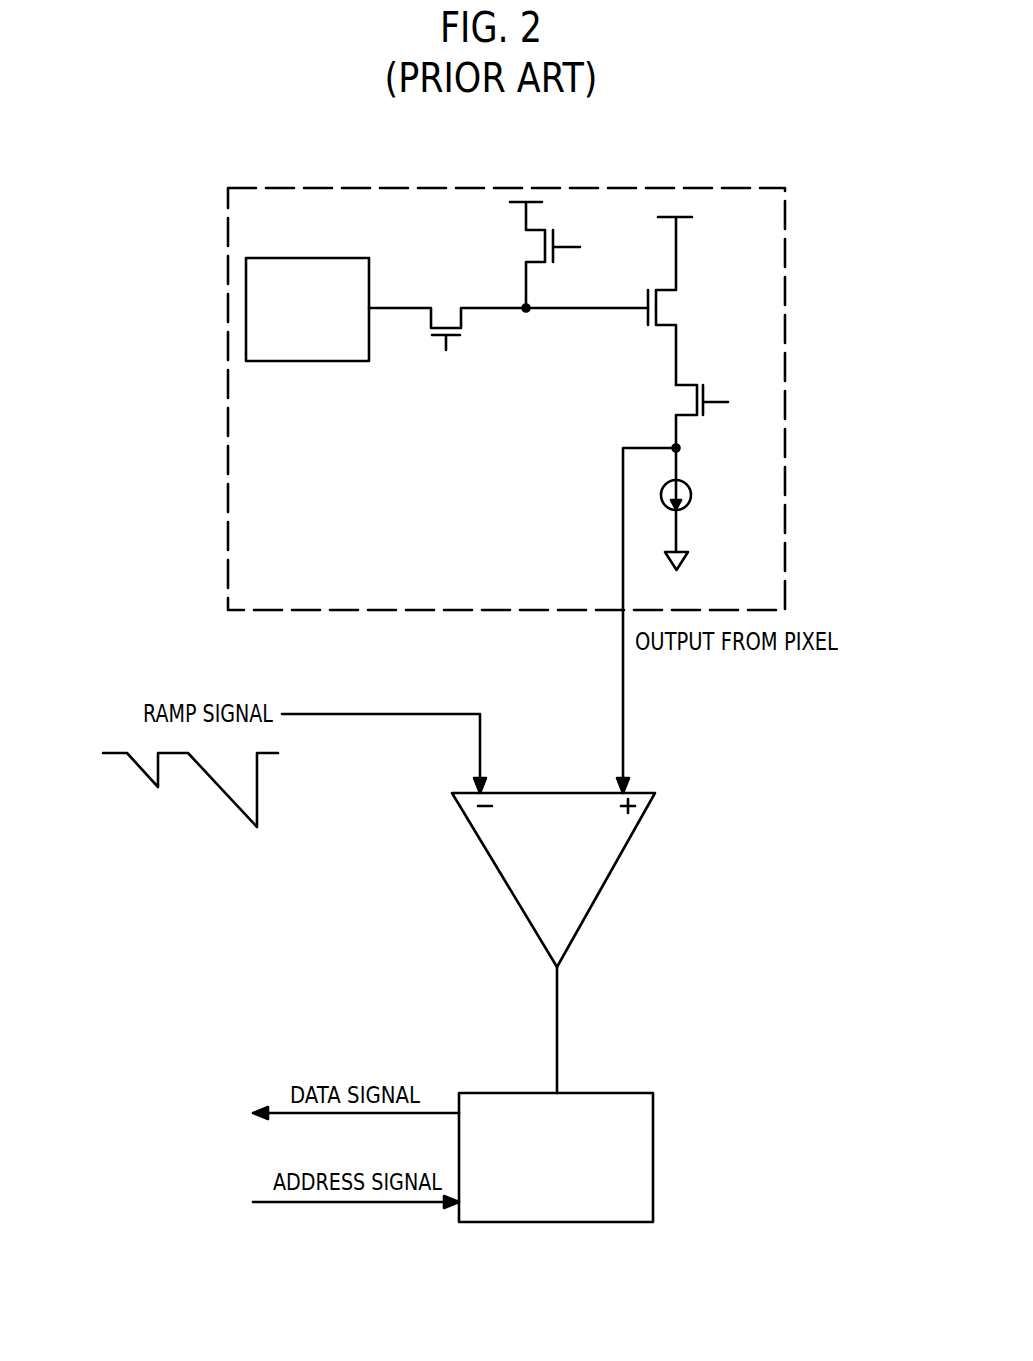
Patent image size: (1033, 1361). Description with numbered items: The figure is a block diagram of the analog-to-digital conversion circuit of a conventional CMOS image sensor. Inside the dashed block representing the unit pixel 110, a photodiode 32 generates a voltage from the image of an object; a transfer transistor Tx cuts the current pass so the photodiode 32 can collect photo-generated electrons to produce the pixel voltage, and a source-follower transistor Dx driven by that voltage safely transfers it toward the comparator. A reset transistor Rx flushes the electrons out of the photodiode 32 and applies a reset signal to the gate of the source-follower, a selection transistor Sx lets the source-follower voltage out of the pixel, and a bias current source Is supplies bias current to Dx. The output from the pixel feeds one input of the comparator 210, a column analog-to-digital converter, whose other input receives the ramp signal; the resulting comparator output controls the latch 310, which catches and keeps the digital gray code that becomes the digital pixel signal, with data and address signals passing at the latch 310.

The unit pixel 110 is at (745, 188).
The photodiode 32 is at (320, 258).
The comparator 210 is at (547, 793).
The latch 310 is at (611, 1093).